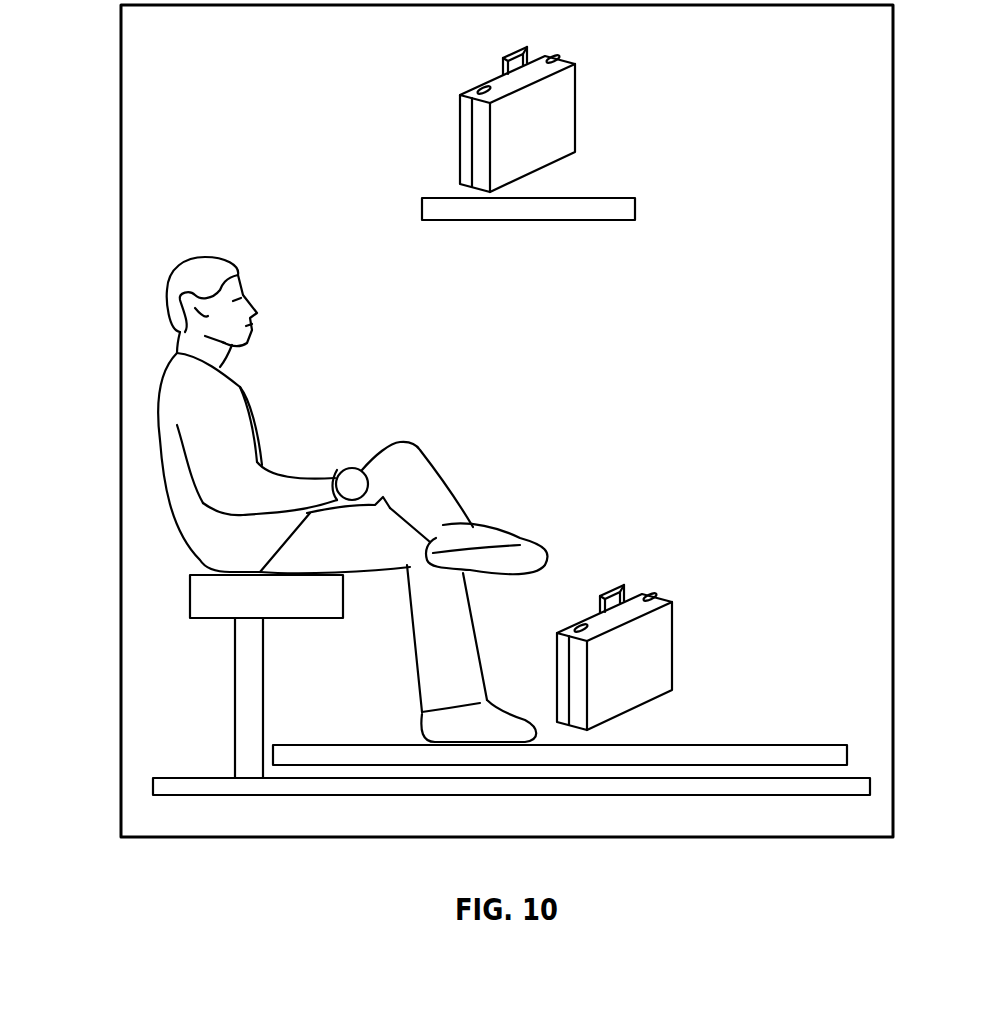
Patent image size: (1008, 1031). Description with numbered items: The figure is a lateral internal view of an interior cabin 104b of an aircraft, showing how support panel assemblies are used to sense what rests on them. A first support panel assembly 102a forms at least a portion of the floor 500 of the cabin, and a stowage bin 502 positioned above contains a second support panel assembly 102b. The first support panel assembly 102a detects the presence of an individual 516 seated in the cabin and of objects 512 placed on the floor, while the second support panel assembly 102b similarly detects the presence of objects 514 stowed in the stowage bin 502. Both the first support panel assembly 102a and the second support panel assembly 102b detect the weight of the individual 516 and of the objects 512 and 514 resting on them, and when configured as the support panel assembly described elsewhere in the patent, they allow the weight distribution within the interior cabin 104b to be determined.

The interior cabin 104b is at (153, 232).
The floor 500 is at (852, 778).
The first support panel assembly 102a is at (738, 745).
The second support panel assembly 102b is at (610, 198).
The stowage bin 502 is at (565, 124).
The objects 514 is at (574, 62).
The objects 512 is at (672, 623).
The individual 516 is at (158, 395).